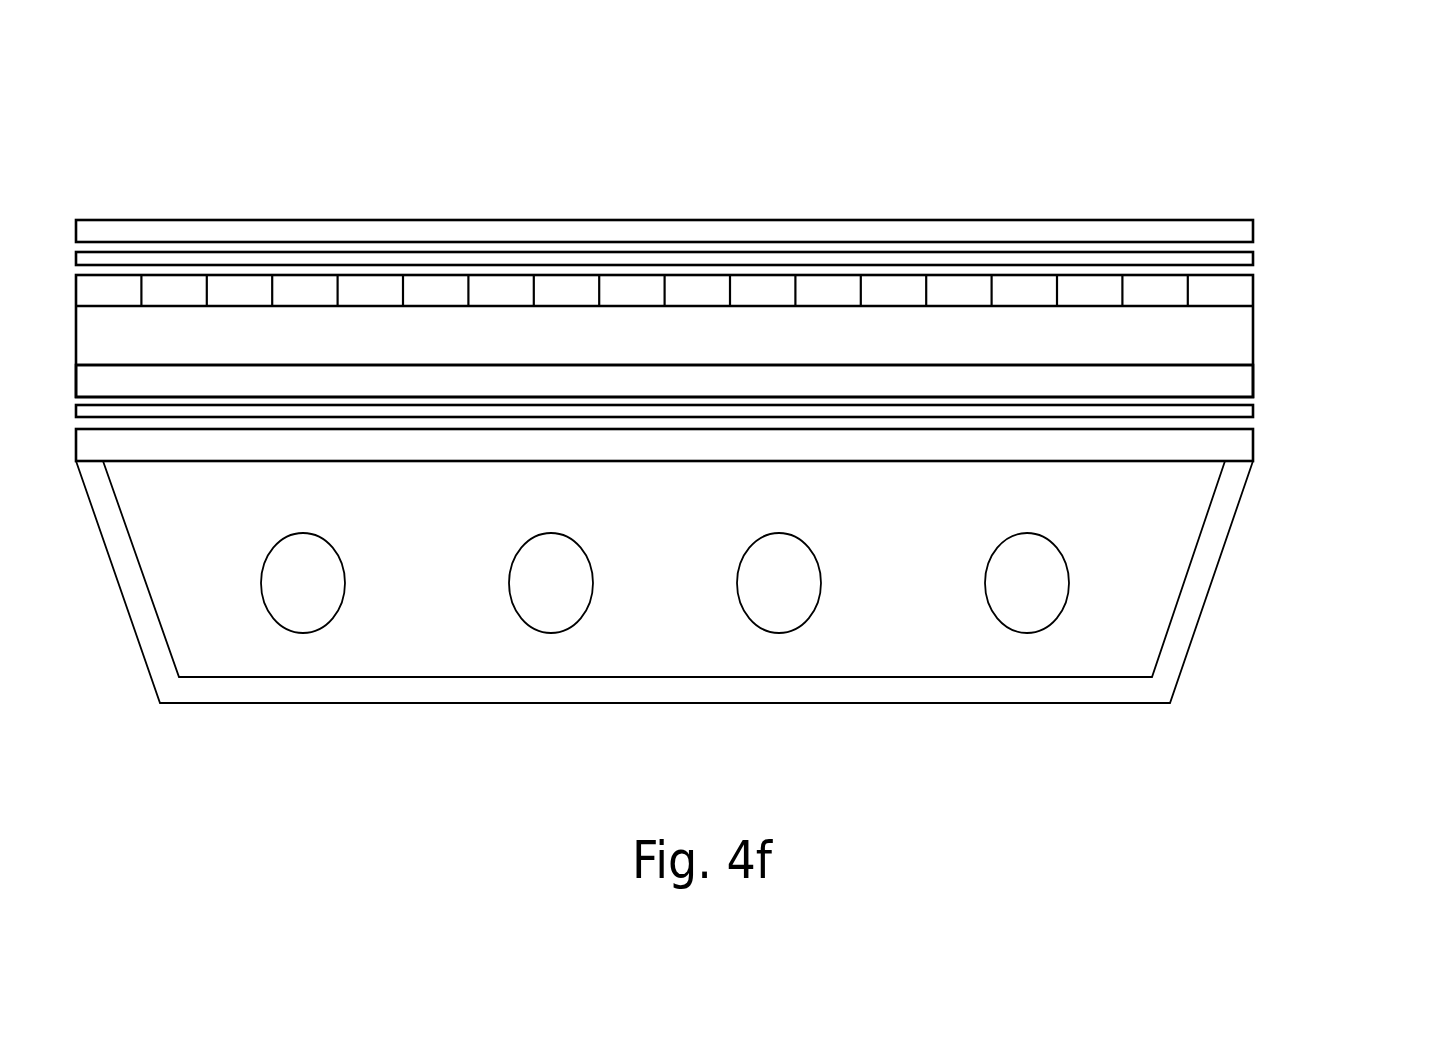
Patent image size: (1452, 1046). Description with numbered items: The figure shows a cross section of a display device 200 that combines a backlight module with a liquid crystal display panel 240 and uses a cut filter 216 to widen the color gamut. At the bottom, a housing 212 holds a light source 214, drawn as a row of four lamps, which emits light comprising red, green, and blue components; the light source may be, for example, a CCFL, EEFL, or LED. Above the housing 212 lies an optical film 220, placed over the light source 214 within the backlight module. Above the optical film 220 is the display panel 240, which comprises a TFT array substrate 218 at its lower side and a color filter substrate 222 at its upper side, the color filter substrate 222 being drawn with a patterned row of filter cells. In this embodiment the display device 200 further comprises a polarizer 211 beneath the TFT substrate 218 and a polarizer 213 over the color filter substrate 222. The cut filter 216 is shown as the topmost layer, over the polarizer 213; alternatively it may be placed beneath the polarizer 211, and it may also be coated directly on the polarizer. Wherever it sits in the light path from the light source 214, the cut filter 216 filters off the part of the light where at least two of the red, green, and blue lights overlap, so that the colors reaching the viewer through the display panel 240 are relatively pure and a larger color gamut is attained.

The display device 200 is at (1218, 153).
The cut filter 216 is at (1254, 233).
The polarizer 213 is at (1254, 261).
The color filter substrate 222 is at (1254, 293).
The display panel 240 is at (759, 335).
The TFT substrate 218 is at (708, 381).
The polarizer 211 is at (1254, 413).
The optical film 220 is at (1254, 443).
The light source 214 is at (1057, 599).
The housing 212 is at (1098, 690).